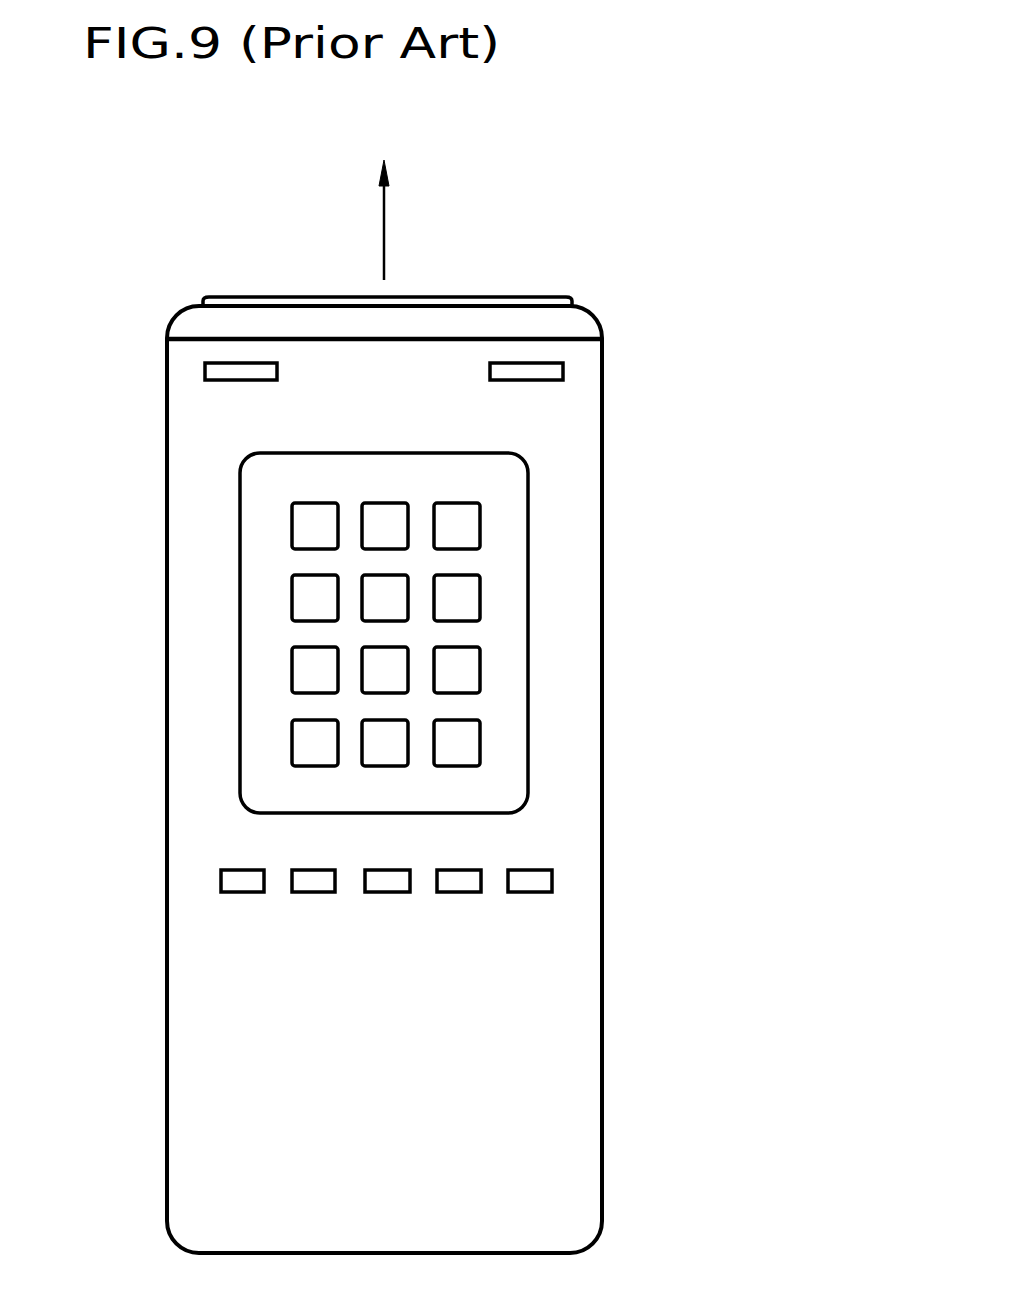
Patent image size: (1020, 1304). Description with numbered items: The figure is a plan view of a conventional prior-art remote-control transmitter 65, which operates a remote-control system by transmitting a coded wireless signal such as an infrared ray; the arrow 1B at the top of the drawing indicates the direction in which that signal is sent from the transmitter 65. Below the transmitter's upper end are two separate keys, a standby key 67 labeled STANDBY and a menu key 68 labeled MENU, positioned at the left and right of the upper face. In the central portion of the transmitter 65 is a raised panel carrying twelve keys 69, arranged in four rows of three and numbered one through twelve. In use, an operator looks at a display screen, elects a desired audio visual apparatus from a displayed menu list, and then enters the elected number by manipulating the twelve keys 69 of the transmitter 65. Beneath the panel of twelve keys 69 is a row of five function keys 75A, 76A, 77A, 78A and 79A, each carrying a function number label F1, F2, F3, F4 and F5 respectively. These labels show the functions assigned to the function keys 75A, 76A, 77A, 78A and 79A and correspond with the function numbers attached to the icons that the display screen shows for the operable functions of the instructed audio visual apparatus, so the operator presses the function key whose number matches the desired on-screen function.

The direction of remote control transmission 1B is at (386, 245).
The remote-control transmitter 65 is at (602, 382).
The standby key 67 is at (205, 371).
The menu key 68 is at (563, 372).
The twelve keys 69 is at (530, 621).
The function key 75A is at (238, 892).
The function key 76A is at (312, 892).
The function key 77A is at (392, 892).
The function key 78A is at (462, 892).
The function key 79A is at (537, 892).